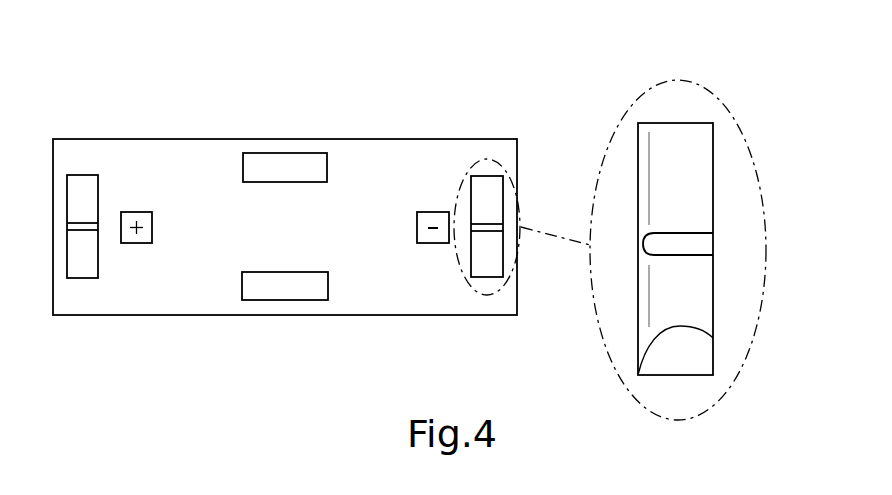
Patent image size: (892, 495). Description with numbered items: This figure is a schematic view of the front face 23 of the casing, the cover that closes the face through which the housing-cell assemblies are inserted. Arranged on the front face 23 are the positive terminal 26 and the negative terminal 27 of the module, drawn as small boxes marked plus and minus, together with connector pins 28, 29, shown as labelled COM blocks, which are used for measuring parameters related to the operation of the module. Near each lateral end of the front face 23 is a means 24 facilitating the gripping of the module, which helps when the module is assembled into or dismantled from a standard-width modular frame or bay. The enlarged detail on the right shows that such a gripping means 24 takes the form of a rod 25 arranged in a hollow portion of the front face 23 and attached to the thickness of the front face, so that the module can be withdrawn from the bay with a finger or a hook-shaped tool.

The front face 23 is at (378, 88).
The means facilitating the gripping of the module 24 is at (83, 175).
The rod 25 is at (677, 243).
The positive terminal 26 is at (133, 247).
The negative terminal 27 is at (437, 247).
The connector pin 28 is at (243, 167).
The connector pin 29 is at (332, 287).